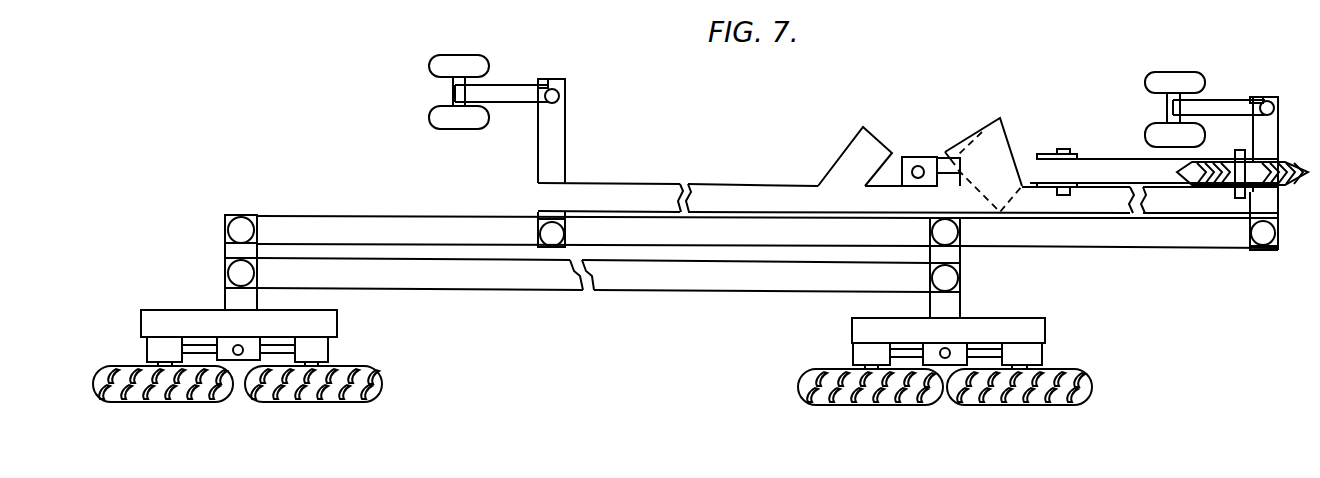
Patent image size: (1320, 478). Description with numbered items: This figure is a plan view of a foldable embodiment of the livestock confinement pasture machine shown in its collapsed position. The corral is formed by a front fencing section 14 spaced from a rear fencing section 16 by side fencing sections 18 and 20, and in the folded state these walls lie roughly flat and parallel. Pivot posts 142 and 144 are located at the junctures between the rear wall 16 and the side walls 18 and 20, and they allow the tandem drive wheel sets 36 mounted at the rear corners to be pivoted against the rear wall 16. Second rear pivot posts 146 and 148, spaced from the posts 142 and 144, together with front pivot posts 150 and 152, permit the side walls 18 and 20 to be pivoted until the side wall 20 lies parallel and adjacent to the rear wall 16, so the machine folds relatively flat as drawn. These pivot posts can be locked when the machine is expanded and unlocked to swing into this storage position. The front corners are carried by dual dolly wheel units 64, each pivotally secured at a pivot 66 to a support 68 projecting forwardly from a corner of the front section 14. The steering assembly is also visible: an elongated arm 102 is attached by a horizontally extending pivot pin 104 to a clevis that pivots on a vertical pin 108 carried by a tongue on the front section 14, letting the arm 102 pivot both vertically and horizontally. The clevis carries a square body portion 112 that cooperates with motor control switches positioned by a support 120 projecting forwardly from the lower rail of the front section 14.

The front fencing section 14 is at (732, 195).
The rear fencing section 16 is at (623, 284).
The side fencing section 18 is at (1168, 235).
The side fencing section 20 is at (393, 216).
The tandem drive wheel set 36 is at (242, 407).
The dual dolly wheel unit 64 is at (471, 52).
The pivot 66 is at (552, 80).
The support 68 is at (556, 137).
The elongated arm 102 is at (1110, 165).
The horizontally extending pivot pin 104 is at (1064, 148).
The vertical pin 108 is at (917, 155).
The square body portion 112 is at (1010, 132).
The support 120 is at (855, 150).
The pivot post 142 is at (236, 272).
The pivot post 144 is at (953, 282).
The second rear pivot post 146 is at (953, 232).
The second rear pivot post 148 is at (240, 214).
The front pivot post 150 is at (556, 234).
The front pivot post 152 is at (1263, 242).